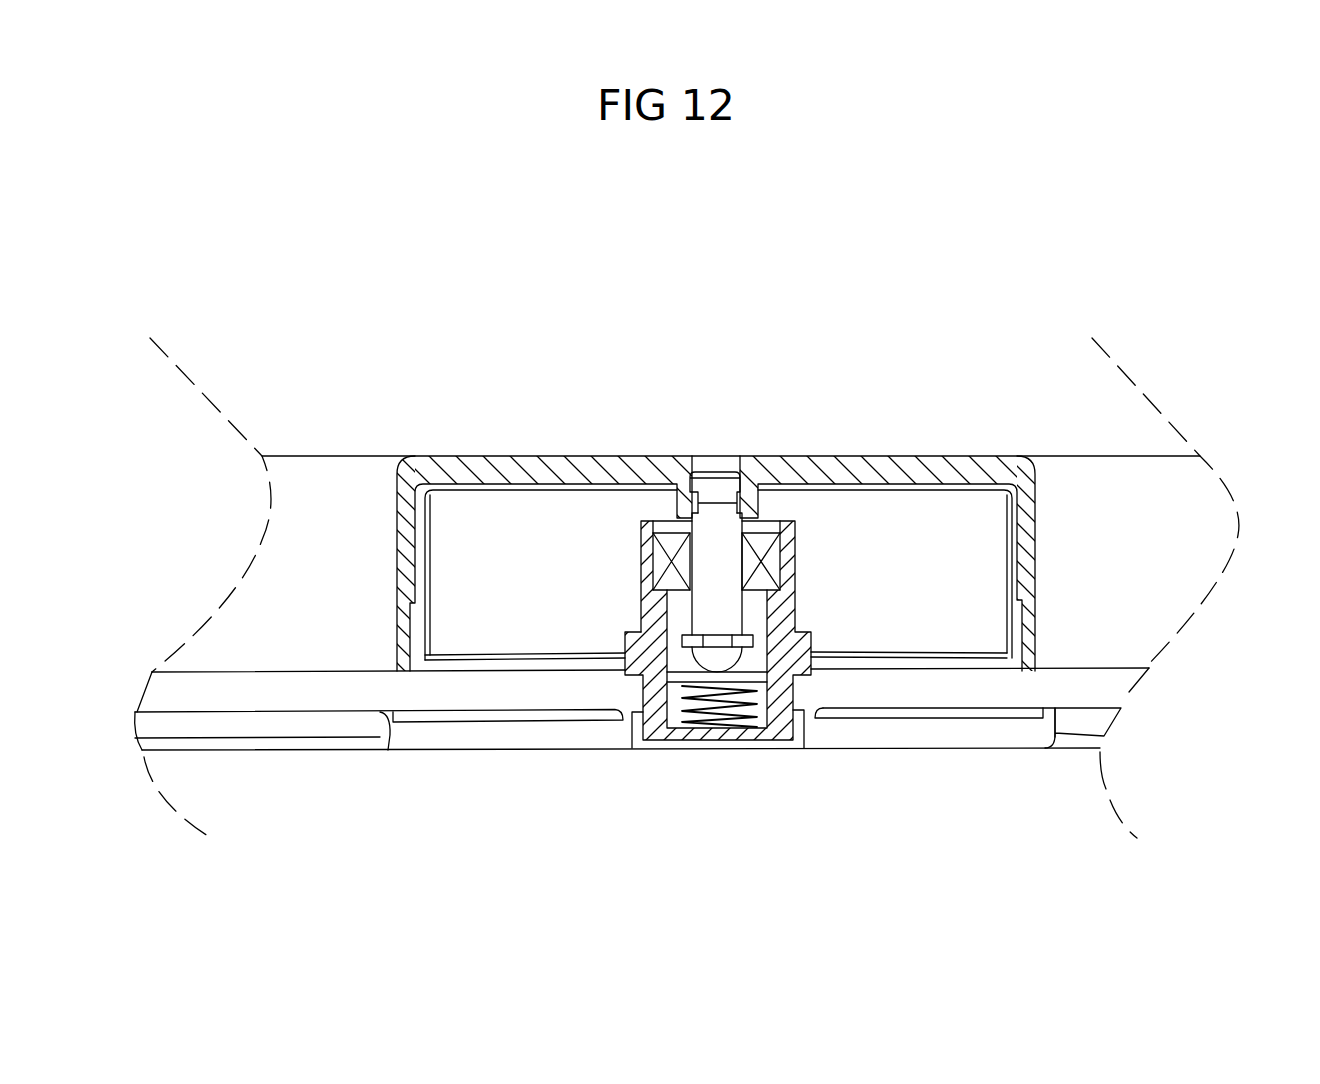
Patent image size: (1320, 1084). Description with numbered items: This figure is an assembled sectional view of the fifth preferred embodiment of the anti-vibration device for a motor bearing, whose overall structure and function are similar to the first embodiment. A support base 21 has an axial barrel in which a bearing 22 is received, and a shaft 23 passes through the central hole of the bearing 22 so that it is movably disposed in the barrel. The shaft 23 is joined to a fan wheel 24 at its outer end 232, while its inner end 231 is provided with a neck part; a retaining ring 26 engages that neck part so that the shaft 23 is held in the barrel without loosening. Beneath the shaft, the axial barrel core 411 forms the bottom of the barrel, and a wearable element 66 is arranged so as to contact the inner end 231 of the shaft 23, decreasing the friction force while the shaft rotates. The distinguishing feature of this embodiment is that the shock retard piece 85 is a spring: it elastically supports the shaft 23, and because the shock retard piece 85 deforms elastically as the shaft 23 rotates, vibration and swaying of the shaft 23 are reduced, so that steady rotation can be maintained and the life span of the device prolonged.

The support base 21 is at (904, 733).
The bearing 22 is at (773, 558).
The shaft 23 is at (727, 537).
The inner end 231 is at (728, 657).
The outer end 232 is at (720, 482).
The fan wheel 24 is at (563, 457).
The retaining ring 26 is at (695, 642).
The axial barrel core 411 is at (648, 527).
The wearable element 66 is at (717, 682).
The shock retard piece 85 is at (692, 720).